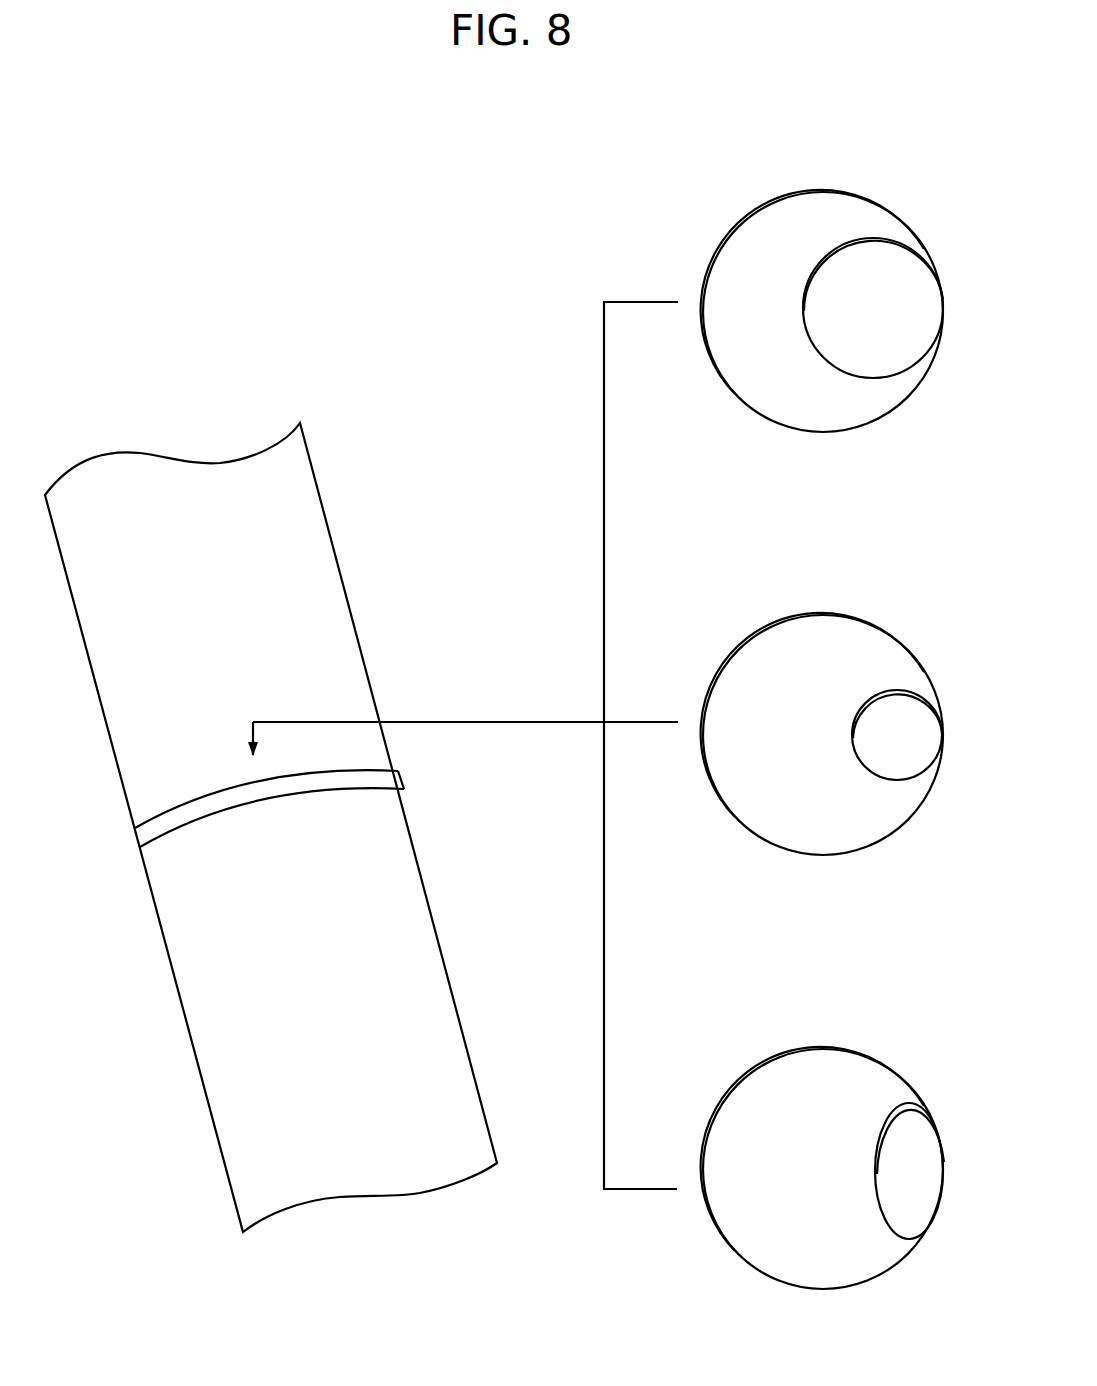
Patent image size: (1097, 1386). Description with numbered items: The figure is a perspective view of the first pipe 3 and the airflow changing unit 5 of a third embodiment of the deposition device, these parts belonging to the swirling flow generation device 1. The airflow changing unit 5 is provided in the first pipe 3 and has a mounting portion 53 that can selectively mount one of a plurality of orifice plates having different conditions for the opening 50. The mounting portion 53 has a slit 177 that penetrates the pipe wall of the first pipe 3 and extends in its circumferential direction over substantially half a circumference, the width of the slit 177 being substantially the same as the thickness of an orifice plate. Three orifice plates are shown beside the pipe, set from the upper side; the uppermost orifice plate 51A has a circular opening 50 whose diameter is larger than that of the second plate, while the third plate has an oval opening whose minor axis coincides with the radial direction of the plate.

The swirling flow generation device 1 is at (459, 166).
The first pipe 3 is at (369, 554).
The airflow changing unit 5 is at (708, 156).
The opening 50 is at (913, 280).
The orifice plate 51A is at (838, 214).
The mounting portion 53 is at (188, 812).
The slit 177 is at (177, 818).